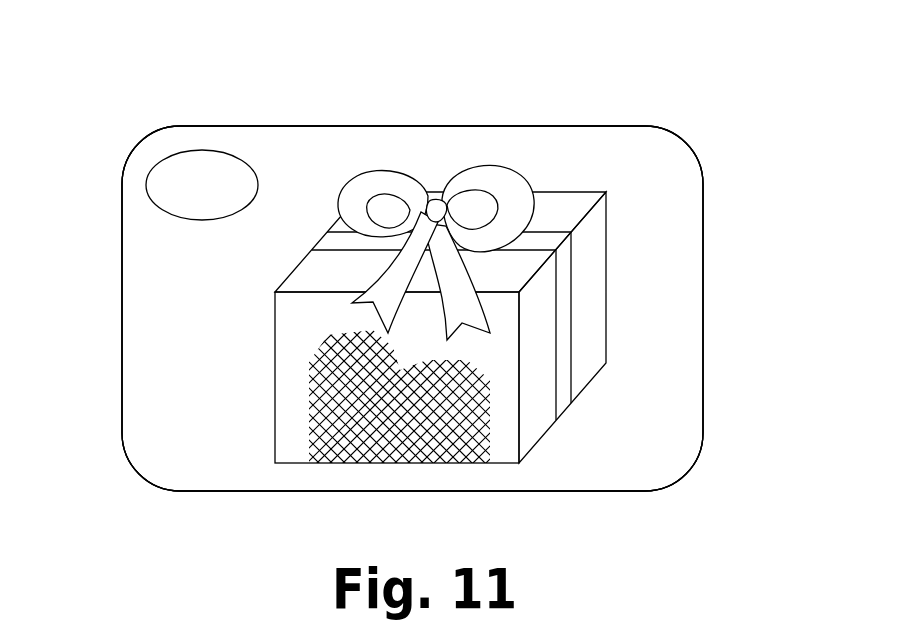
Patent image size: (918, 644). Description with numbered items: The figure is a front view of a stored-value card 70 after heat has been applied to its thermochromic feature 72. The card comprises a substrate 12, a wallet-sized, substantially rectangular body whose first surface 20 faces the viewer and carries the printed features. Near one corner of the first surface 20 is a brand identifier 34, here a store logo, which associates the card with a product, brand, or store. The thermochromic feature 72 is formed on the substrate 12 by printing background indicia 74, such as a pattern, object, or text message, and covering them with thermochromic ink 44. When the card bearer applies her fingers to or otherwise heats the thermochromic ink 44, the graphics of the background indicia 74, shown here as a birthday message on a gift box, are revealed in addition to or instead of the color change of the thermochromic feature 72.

The stored-value card 70 is at (591, 65).
The substrate 12 is at (645, 110).
The first surface 20 is at (652, 210).
The brand identifier 34 is at (128, 183).
The thermochromic ink 44 is at (297, 312).
The thermochromic feature 72 is at (472, 481).
The background indicia 74 is at (357, 437).